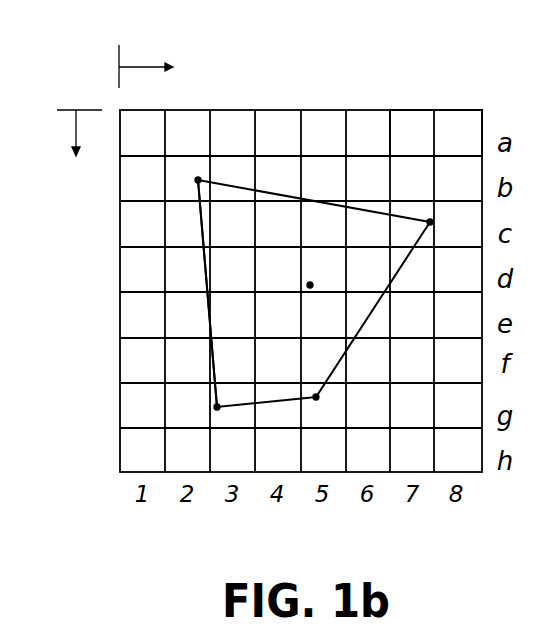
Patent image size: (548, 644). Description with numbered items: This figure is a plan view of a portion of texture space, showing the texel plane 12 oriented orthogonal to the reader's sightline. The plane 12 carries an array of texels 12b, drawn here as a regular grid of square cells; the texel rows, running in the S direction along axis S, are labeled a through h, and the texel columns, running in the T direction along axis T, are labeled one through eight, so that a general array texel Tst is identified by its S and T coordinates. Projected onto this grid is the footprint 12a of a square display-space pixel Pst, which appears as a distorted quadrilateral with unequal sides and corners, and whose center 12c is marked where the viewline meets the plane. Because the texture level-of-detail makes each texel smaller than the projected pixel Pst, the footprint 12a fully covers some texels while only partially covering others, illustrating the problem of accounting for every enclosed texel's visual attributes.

The plane in texture space 12 is at (120, 472).
The footprint 12a is at (215, 406).
The texels 12b is at (455, 127).
The center of footprint 12c is at (309, 285).
The projected pixel Pst is at (236, 185).
The general array texel Tst is at (215, 292).
The T axis T is at (160, 66).
The S axis S is at (79, 152).